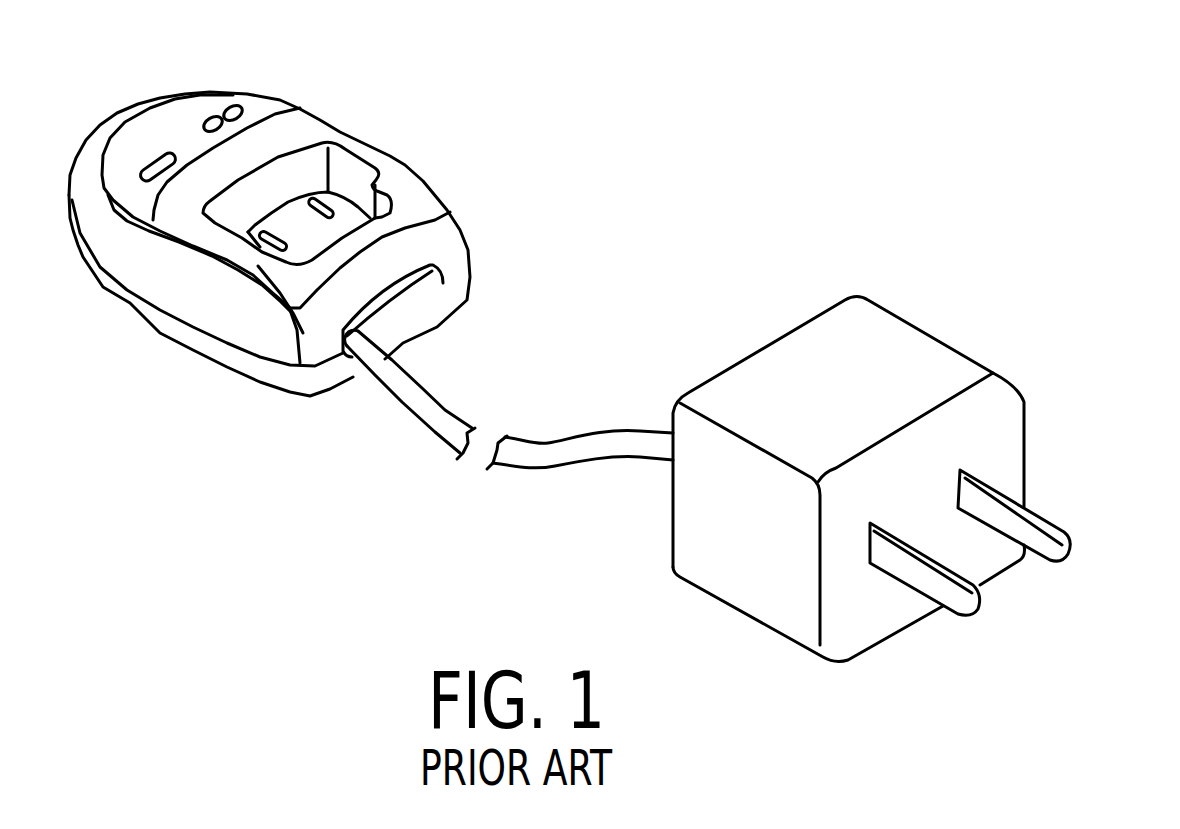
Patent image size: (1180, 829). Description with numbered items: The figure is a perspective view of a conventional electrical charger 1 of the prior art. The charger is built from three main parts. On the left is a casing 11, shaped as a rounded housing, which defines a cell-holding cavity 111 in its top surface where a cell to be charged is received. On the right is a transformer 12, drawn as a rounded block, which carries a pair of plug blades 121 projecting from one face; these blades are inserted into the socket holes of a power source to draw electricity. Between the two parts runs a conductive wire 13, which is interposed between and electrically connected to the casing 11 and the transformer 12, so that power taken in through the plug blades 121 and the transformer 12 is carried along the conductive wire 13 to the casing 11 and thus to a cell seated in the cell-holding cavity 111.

The charger assembly 1 is at (714, 188).
The casing 11 is at (132, 298).
The cell-holding cavity 111 is at (350, 167).
The transformer 12 is at (900, 358).
The plug blades 121 is at (1053, 542).
The conductive wire 13 is at (437, 410).